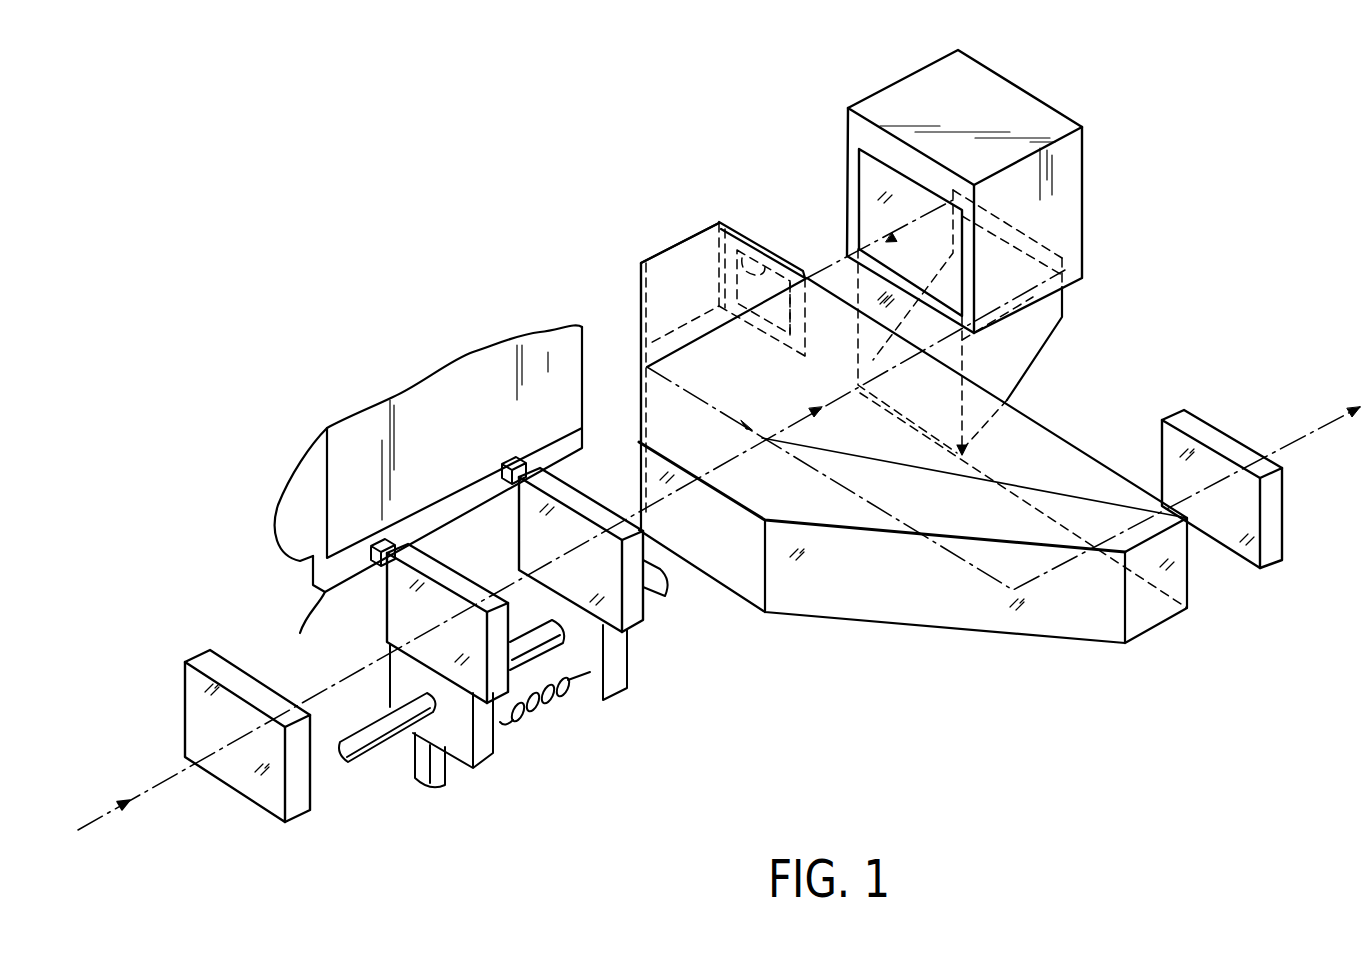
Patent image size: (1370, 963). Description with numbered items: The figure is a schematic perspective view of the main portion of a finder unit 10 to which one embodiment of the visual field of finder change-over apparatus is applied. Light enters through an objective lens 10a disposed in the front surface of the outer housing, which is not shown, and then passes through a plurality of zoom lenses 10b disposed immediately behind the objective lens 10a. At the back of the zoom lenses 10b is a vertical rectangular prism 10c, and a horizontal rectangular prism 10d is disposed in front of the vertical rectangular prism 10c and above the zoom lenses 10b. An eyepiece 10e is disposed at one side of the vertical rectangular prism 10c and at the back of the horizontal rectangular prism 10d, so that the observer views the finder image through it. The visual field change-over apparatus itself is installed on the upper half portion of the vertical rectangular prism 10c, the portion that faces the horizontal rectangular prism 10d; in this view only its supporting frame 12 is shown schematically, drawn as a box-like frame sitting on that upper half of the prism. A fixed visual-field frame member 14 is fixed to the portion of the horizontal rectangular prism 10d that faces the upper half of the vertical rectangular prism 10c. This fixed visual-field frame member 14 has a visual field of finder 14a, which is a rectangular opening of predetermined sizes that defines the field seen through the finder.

The finder unit 10 is at (783, 665).
The objective lens 10a is at (303, 793).
The zoom lenses 10b is at (547, 477).
The vertical rectangular prism 10c is at (1030, 347).
The horizontal rectangular prism 10d is at (677, 267).
The eyepiece 10e is at (1183, 410).
The supporting frame 12 is at (872, 82).
The fixed visual-field frame member 14 is at (800, 270).
The visual field of finder 14a is at (745, 242).